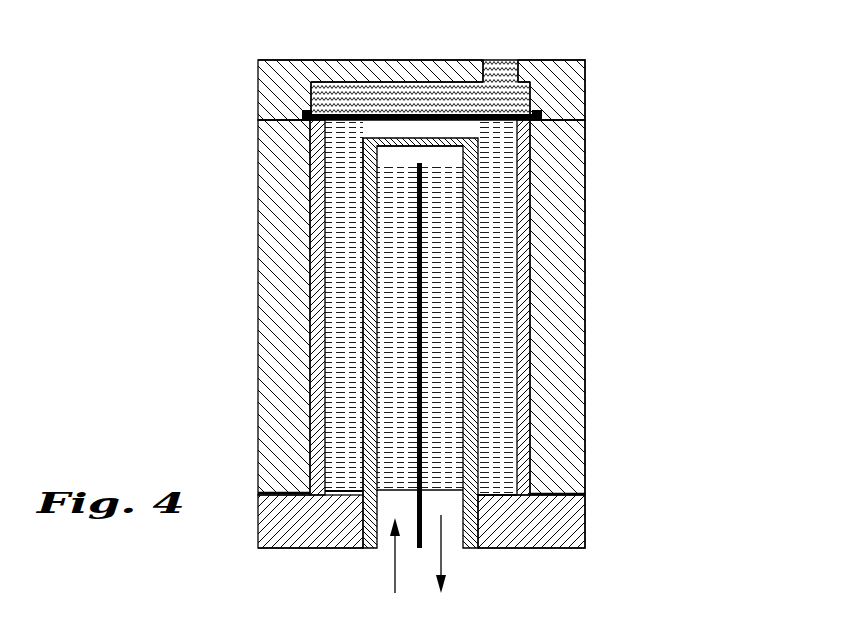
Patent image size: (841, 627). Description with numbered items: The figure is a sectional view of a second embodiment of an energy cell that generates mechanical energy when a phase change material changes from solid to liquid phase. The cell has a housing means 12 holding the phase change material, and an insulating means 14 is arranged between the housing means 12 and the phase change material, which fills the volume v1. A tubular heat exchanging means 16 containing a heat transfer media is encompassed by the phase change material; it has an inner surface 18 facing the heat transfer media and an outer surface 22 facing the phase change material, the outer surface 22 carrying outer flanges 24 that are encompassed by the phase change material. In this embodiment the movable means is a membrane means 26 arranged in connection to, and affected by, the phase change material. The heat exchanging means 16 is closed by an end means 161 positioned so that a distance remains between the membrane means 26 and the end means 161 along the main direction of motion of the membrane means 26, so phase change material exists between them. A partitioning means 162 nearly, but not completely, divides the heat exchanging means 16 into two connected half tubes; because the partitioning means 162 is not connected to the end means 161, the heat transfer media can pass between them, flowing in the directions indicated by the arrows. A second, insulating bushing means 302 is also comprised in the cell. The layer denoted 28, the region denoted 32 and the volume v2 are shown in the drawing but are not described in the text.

The housing means 12 is at (562, 208).
The insulating means 14 is at (528, 365).
The heat exchanging means 16 is at (478, 318).
The inner surface 18 is at (466, 271).
The outer surface 22 is at (363, 258).
The outer flanges 24 is at (342, 202).
The membrane means 26 is at (587, 97).
The heater 28 is at (337, 98).
The opening 32 is at (510, 65).
The end means 161 is at (436, 148).
The partitioning means 162 is at (422, 440).
The second, insulating bushing means 302 is at (585, 537).
The volume v1 is at (343, 328).
The volume v2 is at (330, 103).